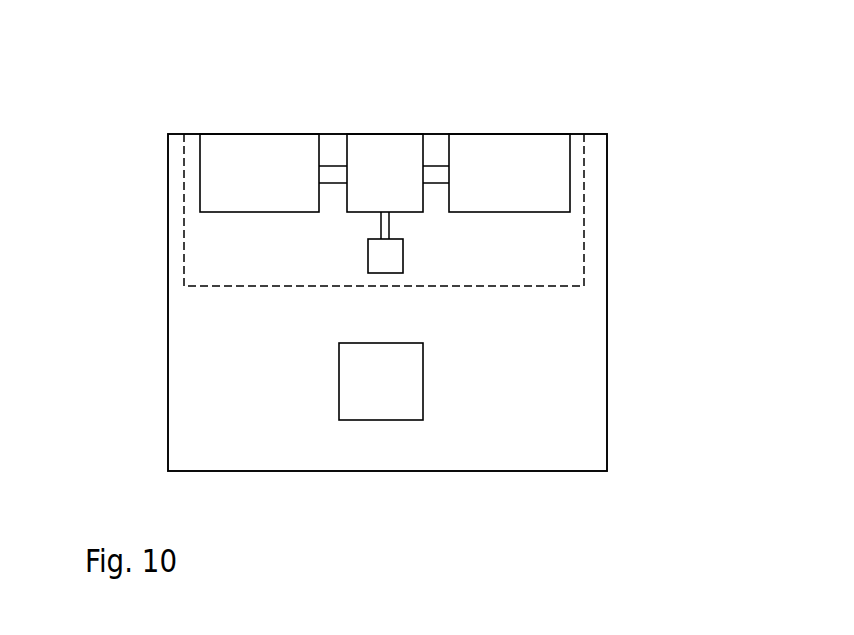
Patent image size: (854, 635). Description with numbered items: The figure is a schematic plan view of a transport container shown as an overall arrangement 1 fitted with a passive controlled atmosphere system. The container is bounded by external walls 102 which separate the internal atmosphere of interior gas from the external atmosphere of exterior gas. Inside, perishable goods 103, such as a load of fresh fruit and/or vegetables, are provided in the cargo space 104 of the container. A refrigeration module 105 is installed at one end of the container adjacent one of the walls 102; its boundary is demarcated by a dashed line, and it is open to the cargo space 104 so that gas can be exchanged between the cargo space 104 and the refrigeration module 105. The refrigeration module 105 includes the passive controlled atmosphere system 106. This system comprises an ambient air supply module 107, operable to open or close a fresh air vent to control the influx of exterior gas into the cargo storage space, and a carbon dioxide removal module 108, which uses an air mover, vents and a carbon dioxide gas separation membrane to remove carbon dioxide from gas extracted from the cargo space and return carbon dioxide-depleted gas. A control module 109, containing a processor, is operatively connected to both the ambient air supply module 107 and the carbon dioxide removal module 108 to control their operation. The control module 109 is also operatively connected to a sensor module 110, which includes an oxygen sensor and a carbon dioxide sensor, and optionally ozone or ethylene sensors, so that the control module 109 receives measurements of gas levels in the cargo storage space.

The device 1 is at (112, 222).
The external wall 102 is at (607, 471).
The perishable goods 103 is at (372, 420).
The cargo space 104 is at (278, 377).
The refrigeration module 105 is at (557, 286).
The passive controlled atmosphere system 106 is at (574, 235).
The ambient air supply module 107 is at (198, 153).
The carbon dioxide removal module 108 is at (572, 148).
The control module 109 is at (425, 145).
The sensor module 110 is at (368, 257).